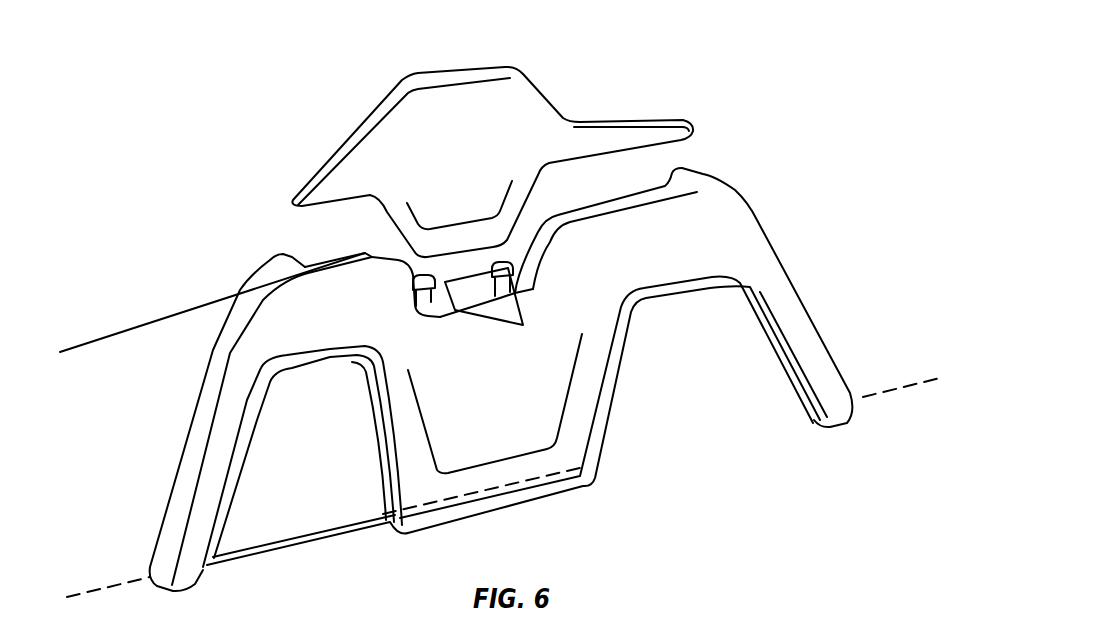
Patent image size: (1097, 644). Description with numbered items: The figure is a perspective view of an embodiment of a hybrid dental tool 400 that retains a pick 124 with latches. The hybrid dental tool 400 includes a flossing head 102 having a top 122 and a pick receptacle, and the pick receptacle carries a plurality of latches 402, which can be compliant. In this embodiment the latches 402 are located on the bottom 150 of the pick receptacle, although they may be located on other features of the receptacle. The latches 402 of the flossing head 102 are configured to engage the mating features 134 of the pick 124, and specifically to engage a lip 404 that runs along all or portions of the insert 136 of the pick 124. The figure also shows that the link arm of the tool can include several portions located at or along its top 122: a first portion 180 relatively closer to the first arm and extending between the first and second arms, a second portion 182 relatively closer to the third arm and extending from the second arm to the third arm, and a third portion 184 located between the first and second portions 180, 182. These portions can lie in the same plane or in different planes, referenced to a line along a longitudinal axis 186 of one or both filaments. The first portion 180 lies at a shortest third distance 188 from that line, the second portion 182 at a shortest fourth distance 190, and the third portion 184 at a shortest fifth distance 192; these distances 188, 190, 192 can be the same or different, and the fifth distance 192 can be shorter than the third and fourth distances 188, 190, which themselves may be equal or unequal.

The flossing head 102 is at (212, 348).
The top 122 is at (264, 265).
The pick 124 is at (473, 64).
The mating features 134 is at (549, 179).
The insert 136 is at (381, 215).
The bottom 150 is at (524, 312).
The first portion 180 is at (337, 273).
The second portion 182 is at (660, 203).
The third portion 184 is at (443, 320).
The longitudinal axis 186 is at (113, 583).
The third distance 188 is at (168, 569).
The fourth distance 190 is at (620, 210).
The fifth distance 192 is at (482, 494).
The hybrid dental tool 400 is at (793, 70).
The latches 402 is at (515, 262).
The lip 404 is at (434, 228).